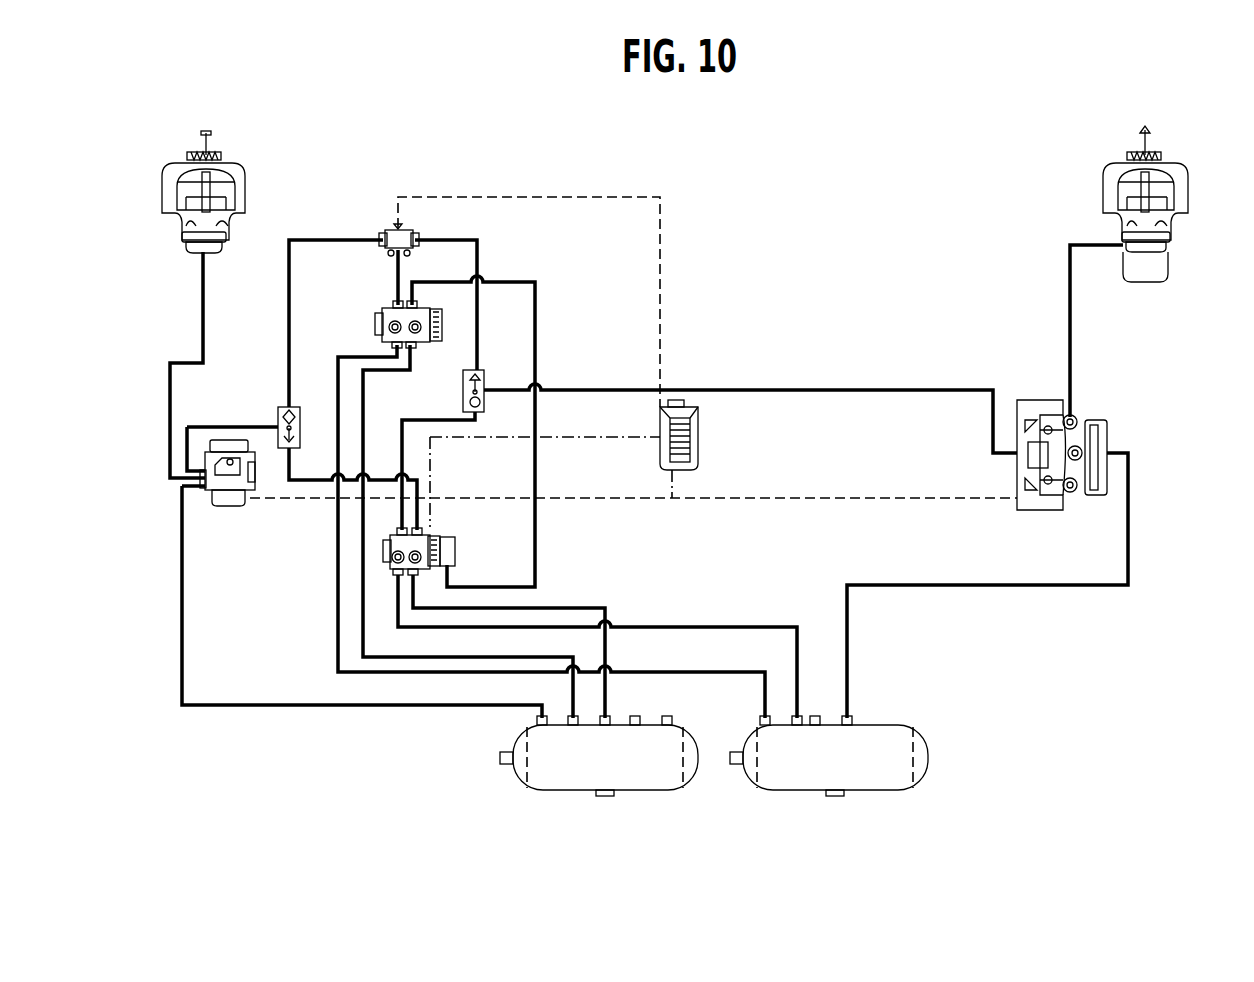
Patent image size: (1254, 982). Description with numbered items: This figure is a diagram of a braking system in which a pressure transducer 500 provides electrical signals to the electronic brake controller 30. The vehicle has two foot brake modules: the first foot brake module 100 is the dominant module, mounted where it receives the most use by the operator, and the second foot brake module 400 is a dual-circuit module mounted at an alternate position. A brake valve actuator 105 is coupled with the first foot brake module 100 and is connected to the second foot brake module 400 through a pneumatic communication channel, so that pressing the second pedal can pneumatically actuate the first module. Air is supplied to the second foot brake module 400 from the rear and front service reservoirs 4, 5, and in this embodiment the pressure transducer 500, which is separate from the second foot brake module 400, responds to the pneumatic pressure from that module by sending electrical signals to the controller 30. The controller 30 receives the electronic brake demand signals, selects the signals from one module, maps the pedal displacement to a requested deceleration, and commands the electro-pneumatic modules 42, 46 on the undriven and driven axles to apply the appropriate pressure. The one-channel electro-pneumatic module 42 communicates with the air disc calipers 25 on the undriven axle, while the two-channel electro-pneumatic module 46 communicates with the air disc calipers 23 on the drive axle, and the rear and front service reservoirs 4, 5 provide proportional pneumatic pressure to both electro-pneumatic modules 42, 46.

The rear service reservoir 4 is at (892, 793).
The front service reservoir 5 is at (666, 793).
The air disc calipers 23 is at (1186, 168).
The air disc calipers 25 is at (170, 200).
The controller 30 is at (698, 430).
The electro-pneumatic module 42 is at (255, 456).
The electro-pneumatic module 46 is at (1112, 428).
The first foot brake module 100 is at (385, 552).
The brake valve actuator 105 is at (456, 545).
The second foot brake module 400 is at (392, 308).
The pressure transducer 500 is at (406, 231).